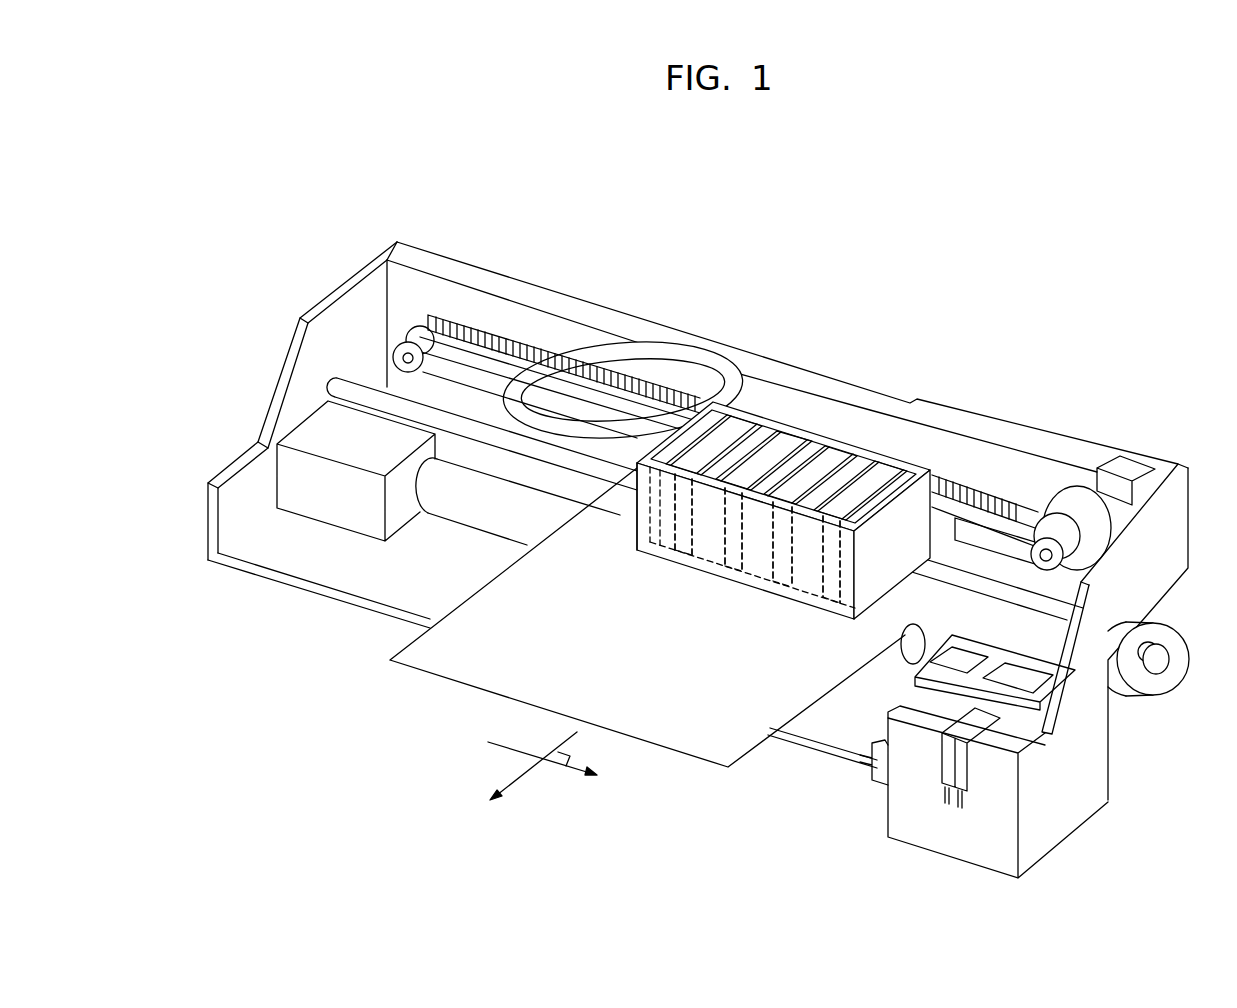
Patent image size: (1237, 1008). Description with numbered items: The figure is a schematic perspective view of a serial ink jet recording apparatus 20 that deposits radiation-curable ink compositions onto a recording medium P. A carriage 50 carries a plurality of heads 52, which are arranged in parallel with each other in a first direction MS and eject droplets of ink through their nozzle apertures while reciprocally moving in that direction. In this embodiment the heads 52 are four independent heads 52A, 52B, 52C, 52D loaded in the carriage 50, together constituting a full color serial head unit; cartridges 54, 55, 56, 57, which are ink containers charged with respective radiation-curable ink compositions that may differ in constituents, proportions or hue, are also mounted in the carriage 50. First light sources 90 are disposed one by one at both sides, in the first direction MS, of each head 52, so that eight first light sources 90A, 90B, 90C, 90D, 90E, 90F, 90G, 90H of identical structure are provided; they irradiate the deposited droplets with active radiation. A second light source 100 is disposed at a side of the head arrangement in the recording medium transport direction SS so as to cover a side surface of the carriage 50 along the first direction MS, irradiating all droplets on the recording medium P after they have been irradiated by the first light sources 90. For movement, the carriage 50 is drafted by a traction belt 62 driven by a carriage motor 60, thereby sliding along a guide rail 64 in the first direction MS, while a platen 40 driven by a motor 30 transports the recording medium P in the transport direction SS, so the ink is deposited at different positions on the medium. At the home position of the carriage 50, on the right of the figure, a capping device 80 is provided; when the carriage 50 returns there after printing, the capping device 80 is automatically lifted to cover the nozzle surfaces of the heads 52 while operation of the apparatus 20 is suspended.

The ink jet recording apparatus 20 is at (1088, 280).
The motor 30 is at (1161, 664).
The platen 40 is at (463, 508).
The carriage 50 is at (823, 467).
The heads 52 is at (770, 597).
The head 52A is at (685, 567).
The head 52B is at (738, 580).
The head 52C is at (790, 590).
The head 52D is at (844, 603).
The cartridge 54 is at (677, 547).
The cartridge 55 is at (728, 562).
The cartridge 56 is at (780, 575).
The cartridge 57 is at (828, 592).
The carriage motor 60 is at (1083, 508).
The traction belt 62 is at (455, 353).
The guide rail 64 is at (367, 388).
The capping device 80 is at (997, 658).
The first light sources 90 is at (830, 368).
The first light source 90A is at (710, 412).
The first light source 90B is at (745, 418).
The first light source 90C is at (760, 420).
The first light source 90D is at (795, 435).
The first light source 90E is at (808, 437).
The first light source 90F is at (842, 450).
The first light source 90G is at (858, 455).
The first light source 90H is at (925, 393).
The second light source 100 is at (626, 532).
The recording medium P is at (752, 731).
The first direction MS is at (563, 768).
The recording medium transport direction SS is at (520, 783).